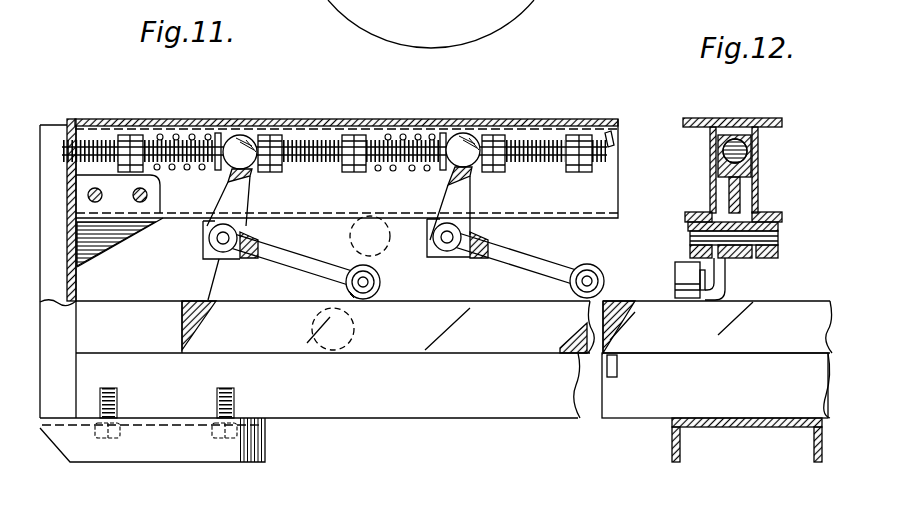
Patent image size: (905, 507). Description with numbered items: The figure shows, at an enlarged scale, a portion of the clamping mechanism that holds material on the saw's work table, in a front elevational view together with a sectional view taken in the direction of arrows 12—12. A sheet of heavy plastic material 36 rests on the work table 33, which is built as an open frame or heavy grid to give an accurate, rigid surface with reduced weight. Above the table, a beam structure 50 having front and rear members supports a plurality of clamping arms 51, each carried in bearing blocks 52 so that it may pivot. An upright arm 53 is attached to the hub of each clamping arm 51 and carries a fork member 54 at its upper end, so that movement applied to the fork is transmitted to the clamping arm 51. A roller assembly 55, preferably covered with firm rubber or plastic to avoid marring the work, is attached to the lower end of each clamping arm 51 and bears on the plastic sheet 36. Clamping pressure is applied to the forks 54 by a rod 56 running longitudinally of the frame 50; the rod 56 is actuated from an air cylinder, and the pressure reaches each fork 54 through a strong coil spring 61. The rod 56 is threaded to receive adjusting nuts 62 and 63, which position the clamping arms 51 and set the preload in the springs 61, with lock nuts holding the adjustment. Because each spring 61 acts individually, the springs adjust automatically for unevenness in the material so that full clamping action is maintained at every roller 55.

In FIG. 11, the section line 12 is at (248, 125).
In FIG. 11, the work table 33 is at (363, 410).
In FIG. 12, the work table 33 is at (662, 412).
In FIG. 11, the sheet of heavy plastic material 36 is at (182, 330).
In FIG. 12, the sheet of heavy plastic material 36 is at (780, 305).
In FIG. 11, the beam structure 50 is at (620, 140).
In FIG. 12, the beam structure 50 is at (758, 187).
In FIG. 11, the clamping arm 51 is at (313, 257).
In FIG. 12, the clamping arm 51 is at (726, 270).
In FIG. 11, the bearing block 52 is at (205, 245).
In FIG. 12, the bearing block 52 is at (690, 222).
In FIG. 11, the upright arm 53 is at (240, 196).
In FIG. 12, the upright arm 53 is at (729, 192).
In FIG. 11, the fork member 54 is at (245, 138).
In FIG. 12, the fork member 54 is at (752, 137).
In FIG. 11, the roller assembly 55 is at (380, 287).
In FIG. 12, the roller assembly 55 is at (675, 270).
In FIG. 11, the rod 56 is at (537, 142).
In FIG. 12, the rod 56 is at (736, 140).
In FIG. 11, the coil spring 61 is at (177, 133).
In FIG. 11, the adjusting nut 62 is at (356, 140).
In FIG. 11, the adjusting nut 63 is at (282, 142).